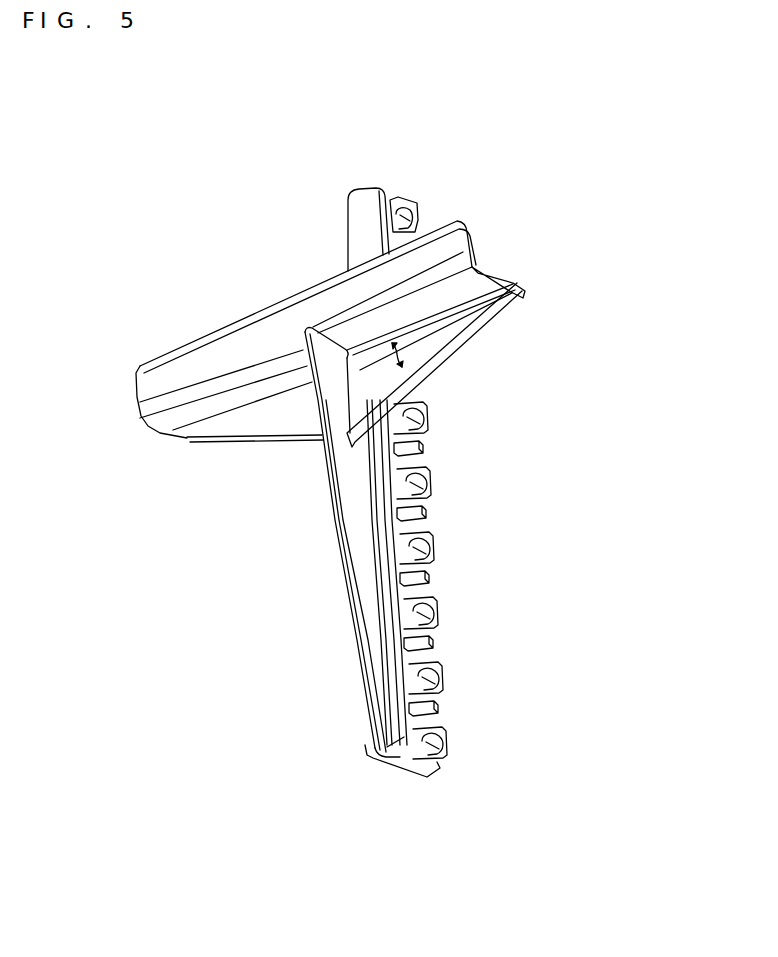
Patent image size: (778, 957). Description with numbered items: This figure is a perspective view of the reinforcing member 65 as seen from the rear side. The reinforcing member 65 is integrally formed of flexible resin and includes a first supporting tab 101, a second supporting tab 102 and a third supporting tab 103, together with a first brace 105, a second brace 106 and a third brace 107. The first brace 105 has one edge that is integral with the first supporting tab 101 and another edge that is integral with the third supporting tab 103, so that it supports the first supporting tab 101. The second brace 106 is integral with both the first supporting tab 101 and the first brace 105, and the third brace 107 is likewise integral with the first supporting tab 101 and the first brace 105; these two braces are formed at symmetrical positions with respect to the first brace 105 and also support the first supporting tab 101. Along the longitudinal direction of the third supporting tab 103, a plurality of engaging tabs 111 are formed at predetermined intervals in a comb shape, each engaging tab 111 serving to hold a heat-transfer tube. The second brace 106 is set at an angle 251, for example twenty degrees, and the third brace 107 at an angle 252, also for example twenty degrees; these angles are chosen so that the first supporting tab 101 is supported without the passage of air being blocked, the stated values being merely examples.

The reinforcing member 65 is at (262, 762).
The first supporting tab 101 is at (524, 288).
The second supporting tab 102 is at (447, 242).
The third supporting tab 103 is at (358, 213).
The first brace 105 is at (357, 503).
The second brace 106 is at (410, 346).
The third brace 107 is at (267, 400).
The engaging tabs 111 is at (443, 690).
The angle of the second brace 251 is at (414, 407).
The angle of the third brace 252 is at (259, 427).